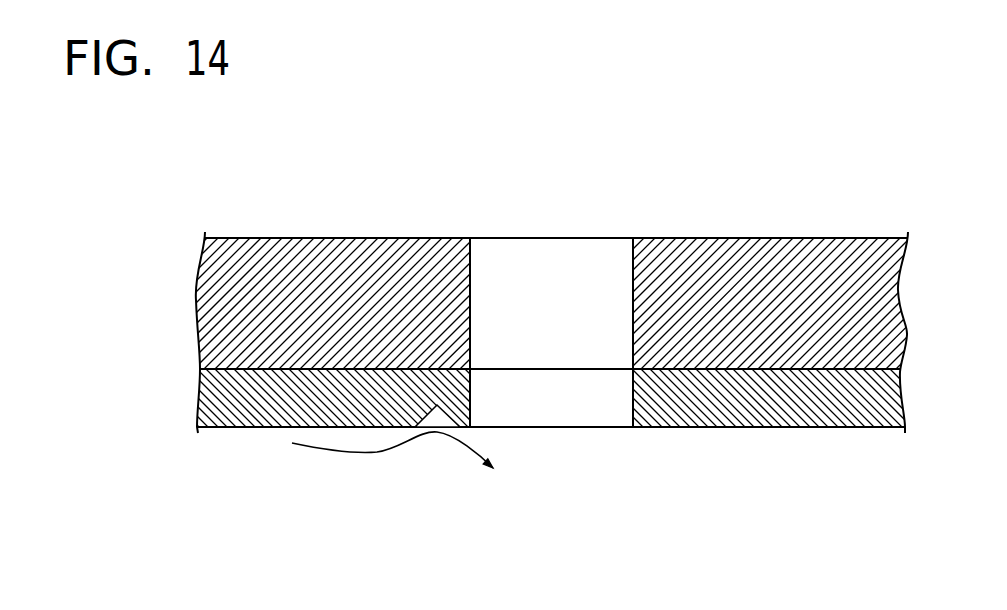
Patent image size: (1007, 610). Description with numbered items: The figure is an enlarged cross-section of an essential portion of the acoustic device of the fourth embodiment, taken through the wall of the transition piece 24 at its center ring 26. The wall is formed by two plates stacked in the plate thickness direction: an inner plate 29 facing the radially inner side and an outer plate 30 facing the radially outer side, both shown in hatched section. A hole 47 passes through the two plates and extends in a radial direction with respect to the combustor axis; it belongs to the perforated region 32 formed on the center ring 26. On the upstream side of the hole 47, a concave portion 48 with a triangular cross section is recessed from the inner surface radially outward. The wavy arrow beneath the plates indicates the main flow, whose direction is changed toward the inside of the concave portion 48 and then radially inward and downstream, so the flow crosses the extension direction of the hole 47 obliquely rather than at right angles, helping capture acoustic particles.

The transition piece 24 is at (552, 269).
The center ring 26 is at (552, 332).
The inner plate 29 is at (212, 398).
The outer plate 30 is at (212, 308).
The perforated region 32 is at (438, 490).
The hole 47 is at (633, 268).
The concave portion 48 is at (450, 420).